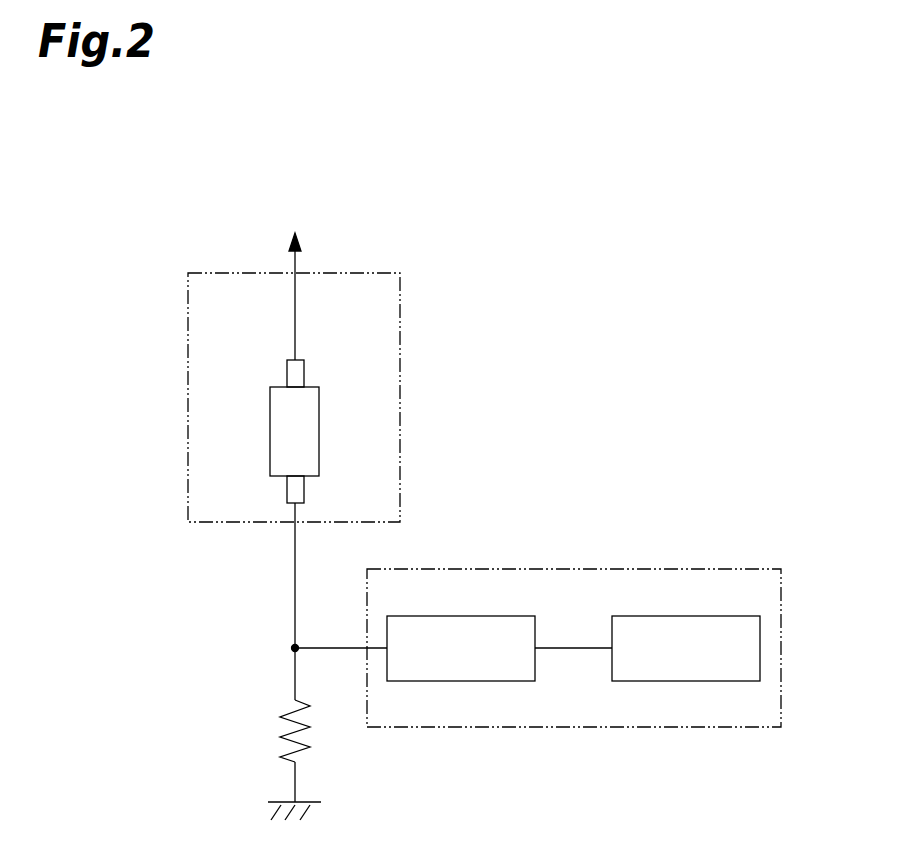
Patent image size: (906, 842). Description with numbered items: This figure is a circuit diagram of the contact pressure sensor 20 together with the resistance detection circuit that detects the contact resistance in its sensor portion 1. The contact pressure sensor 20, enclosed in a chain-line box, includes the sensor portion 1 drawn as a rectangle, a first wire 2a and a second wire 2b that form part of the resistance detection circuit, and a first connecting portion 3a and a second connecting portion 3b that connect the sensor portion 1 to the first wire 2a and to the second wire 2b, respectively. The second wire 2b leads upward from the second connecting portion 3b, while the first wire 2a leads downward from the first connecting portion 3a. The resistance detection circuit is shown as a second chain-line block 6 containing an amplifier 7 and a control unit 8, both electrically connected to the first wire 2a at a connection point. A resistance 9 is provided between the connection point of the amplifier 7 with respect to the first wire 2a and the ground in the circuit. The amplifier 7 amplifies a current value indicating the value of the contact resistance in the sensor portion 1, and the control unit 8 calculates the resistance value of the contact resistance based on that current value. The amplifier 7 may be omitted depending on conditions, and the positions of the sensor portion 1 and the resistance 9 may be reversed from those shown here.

The contact pressure sensor 20 is at (188, 292).
The second wire 2b is at (296, 318).
The second connecting portion 3b is at (285, 372).
The sensor portion 1 is at (268, 427).
The first connecting portion 3a is at (285, 488).
The first wire 2a is at (293, 672).
The resistance 9 is at (288, 747).
The signal processing unit 6 is at (572, 569).
The amplifier 7 is at (462, 616).
The control unit 8 is at (688, 616).